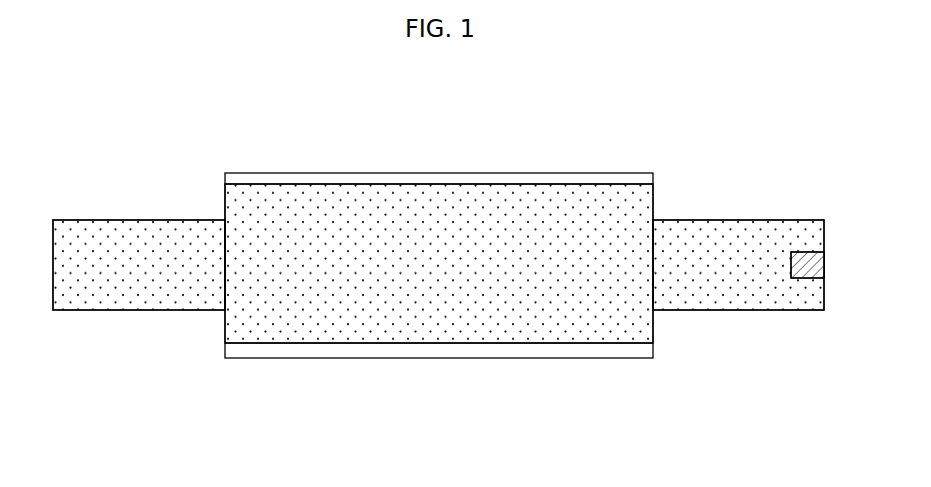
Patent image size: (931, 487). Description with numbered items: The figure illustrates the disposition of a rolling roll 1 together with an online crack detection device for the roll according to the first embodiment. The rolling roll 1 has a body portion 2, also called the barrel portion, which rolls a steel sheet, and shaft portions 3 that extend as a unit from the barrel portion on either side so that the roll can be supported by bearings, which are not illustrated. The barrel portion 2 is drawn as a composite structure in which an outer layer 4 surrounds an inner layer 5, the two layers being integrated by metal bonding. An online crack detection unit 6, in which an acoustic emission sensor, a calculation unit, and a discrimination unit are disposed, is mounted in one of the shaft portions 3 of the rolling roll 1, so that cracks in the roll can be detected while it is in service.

The rolling roll 1 is at (43, 395).
The body portion 2 is at (439, 216).
The shaft portions 3 is at (135, 218).
The outer layer 4 is at (305, 172).
The inner layer 5 is at (225, 147).
The online crack detection unit 6 is at (803, 252).